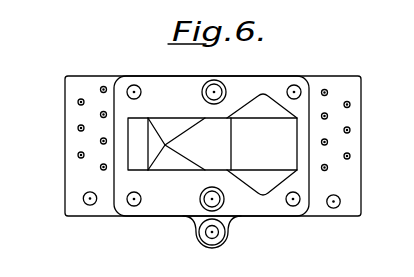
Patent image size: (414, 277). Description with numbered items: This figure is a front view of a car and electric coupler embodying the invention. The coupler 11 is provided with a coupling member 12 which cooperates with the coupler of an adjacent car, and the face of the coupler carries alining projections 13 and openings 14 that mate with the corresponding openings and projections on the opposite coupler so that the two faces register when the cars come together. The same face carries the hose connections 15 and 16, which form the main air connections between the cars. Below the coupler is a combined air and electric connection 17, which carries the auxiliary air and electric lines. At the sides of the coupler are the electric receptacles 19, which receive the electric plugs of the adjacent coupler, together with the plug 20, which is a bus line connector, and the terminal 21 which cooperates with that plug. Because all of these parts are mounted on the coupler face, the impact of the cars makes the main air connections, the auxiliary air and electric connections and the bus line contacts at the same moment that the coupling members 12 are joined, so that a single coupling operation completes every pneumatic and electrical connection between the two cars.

The coupler 11 is at (166, 97).
The coupling member 12 is at (177, 160).
The alining projection 13 is at (131, 89).
The opening 14 is at (296, 90).
The hose connection 15 is at (216, 89).
The hose connection 16 is at (207, 205).
The combined air and electric connection 17 is at (226, 241).
The receptacle 19 is at (350, 129).
The plug 20 is at (84, 199).
The terminal 21 is at (340, 197).